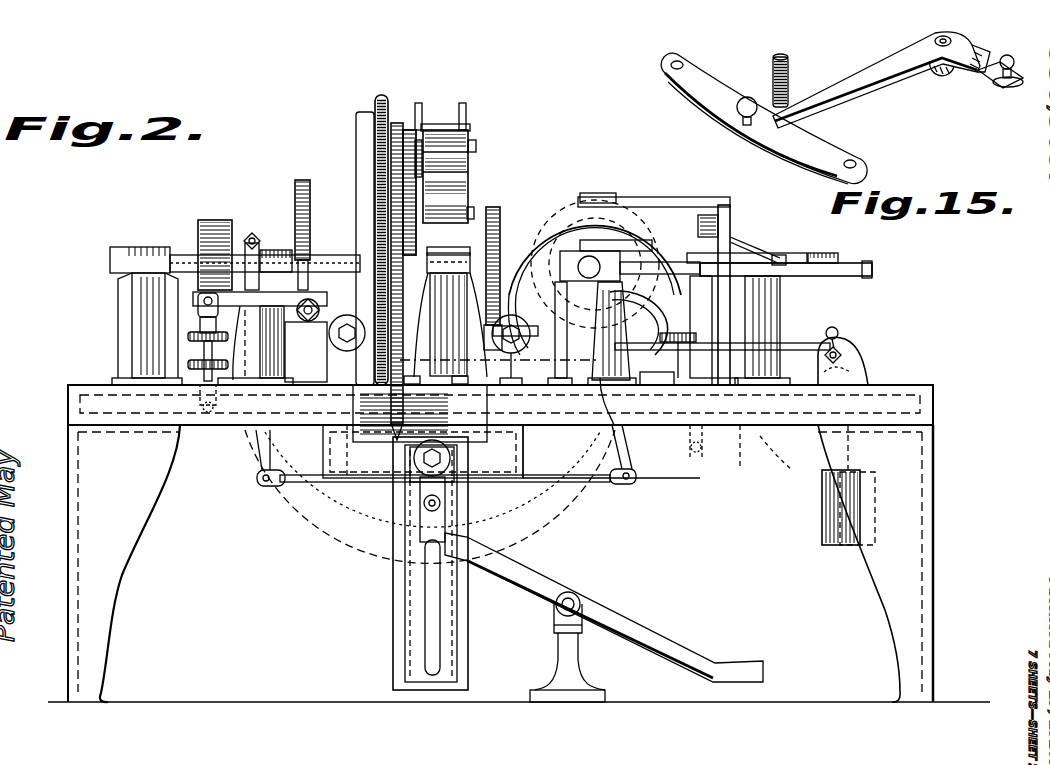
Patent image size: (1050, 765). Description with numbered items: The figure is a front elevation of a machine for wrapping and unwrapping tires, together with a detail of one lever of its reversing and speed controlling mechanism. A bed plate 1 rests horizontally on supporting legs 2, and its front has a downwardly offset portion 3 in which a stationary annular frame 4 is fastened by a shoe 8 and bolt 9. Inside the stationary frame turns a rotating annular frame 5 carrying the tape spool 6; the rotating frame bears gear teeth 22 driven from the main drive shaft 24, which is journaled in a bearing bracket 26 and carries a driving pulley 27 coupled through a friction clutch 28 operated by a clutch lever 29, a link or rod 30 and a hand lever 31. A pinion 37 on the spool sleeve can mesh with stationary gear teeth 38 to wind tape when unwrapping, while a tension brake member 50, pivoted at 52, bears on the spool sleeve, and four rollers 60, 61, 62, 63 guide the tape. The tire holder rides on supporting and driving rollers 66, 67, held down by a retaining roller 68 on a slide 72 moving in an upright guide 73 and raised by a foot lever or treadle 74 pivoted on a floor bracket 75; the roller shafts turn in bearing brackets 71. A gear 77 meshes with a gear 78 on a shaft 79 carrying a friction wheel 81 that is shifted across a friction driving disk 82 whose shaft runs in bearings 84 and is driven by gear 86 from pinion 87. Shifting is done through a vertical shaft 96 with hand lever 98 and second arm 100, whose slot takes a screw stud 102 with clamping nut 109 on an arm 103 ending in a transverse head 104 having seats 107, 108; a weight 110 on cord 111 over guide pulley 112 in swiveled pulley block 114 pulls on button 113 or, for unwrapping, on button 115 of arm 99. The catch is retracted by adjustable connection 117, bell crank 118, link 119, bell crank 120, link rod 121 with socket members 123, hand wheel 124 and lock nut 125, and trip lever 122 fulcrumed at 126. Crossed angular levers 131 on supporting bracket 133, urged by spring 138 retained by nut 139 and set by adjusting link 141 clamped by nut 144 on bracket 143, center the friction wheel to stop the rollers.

In FIG. 2, the bed plate 1 is at (900, 392).
In FIG. 2, the supporting legs 2 is at (148, 497).
In FIG. 2, the downwardly offset portion 3 is at (345, 463).
In FIG. 2, the stationary annular frame 4 is at (382, 96).
In FIG. 2, the rotating annular frame 5 is at (357, 120).
In FIG. 2, the tape spool 6 is at (462, 103).
In FIG. 2, the shoe 8 is at (420, 413).
In FIG. 2, the bolt 9 is at (499, 494).
In FIG. 2, the gear teeth 22 is at (397, 122).
In FIG. 2, the longitudinal shaft 24 is at (180, 255).
In FIG. 2, the bearing bracket 26 is at (133, 248).
In FIG. 2, the driving pulley 27 is at (214, 220).
In FIG. 2, the friction clutch 28 is at (245, 236).
In FIG. 2, the clutch lever 29 is at (275, 250).
In FIG. 2, the link or rod 30 is at (655, 368).
In FIG. 2, the hand lever 31 is at (641, 423).
In FIG. 2, the pinion 37 is at (423, 140).
In FIG. 2, the gear teeth 38 is at (476, 142).
In FIG. 2, the tension brake member 50 is at (418, 104).
In FIG. 2, the pivot 52 is at (430, 152).
In FIG. 2, the roller 60 is at (481, 212).
In FIG. 2, the roller 61 is at (450, 206).
In FIG. 2, the roller 62 is at (440, 172).
In FIG. 2, the roller 63 is at (474, 208).
In FIG. 2, the supporting and driving roller 66 is at (334, 350).
In FIG. 2, the supporting and driving roller 67 is at (528, 265).
In FIG. 2, the retaining roller 68 is at (446, 448).
In FIG. 2, the bearing bracket 71 is at (306, 352).
In FIG. 2, the slide 72 is at (445, 487).
In FIG. 2, the upright guide 73 is at (398, 540).
In FIG. 2, the foot lever or treadle 74 is at (548, 582).
In FIG. 2, the bracket 75 is at (556, 655).
In FIG. 2, the gear 77 is at (611, 451).
In FIG. 2, the gear 78 is at (682, 336).
In FIG. 2, the shaft 79 is at (625, 247).
In FIG. 2, the friction wheel 81 is at (598, 178).
In FIG. 2, the friction driving disk 82 is at (595, 264).
In FIG. 2, the bearings 84 is at (311, 212).
In FIG. 2, the gear 86 is at (300, 182).
In FIG. 2, the pinion 87 is at (311, 242).
In FIG. 2, the vertical pivot or shaft 96 is at (732, 216).
In FIG. 2, the hand lever 98 is at (645, 197).
In FIG. 2, the angularly projecting arm 99 is at (772, 434).
In FIG. 15, the angularly projecting arm 99 is at (991, 54).
In FIG. 2, the second arm 100 is at (608, 333).
In FIG. 15, the screw stud 102 is at (790, 77).
In FIG. 2, the arm 103 is at (585, 409).
In FIG. 15, the arm 103 is at (880, 88).
In FIG. 15, the transverse head 104 is at (823, 150).
In FIG. 15, the seat 107 is at (866, 160).
In FIG. 15, the seat 108 is at (664, 62).
In FIG. 2, the clamping nut 109 is at (722, 442).
In FIG. 2, the weight 110 is at (822, 503).
In FIG. 2, the cord 111 is at (722, 334).
In FIG. 2, the guide pulley 112 is at (848, 342).
In FIG. 15, the stud or button 113 is at (744, 125).
In FIG. 2, the pulley block 114 is at (862, 380).
In FIG. 2, the pin or button 115 is at (838, 333).
In FIG. 15, the pin or button 115 is at (1000, 84).
In FIG. 2, the adjustable connection 117 is at (788, 455).
In FIG. 2, the bell crank 118 is at (636, 476).
In FIG. 2, the link 119 is at (590, 481).
In FIG. 2, the bell crank 120 is at (255, 443).
In FIG. 2, the link rod 121 is at (204, 350).
In FIG. 2, the trip lever 122 is at (260, 337).
In FIG. 2, the threaded socket member 123 is at (198, 312).
In FIG. 2, the hand wheel 124 is at (190, 364).
In FIG. 2, the lock nut 125 is at (192, 335).
In FIG. 2, the fulcrum 126 is at (312, 268).
In FIG. 2, the angular levers 131 is at (808, 259).
In FIG. 2, the supporting bracket 133 is at (860, 282).
In FIG. 2, the spring 138 is at (780, 258).
In FIG. 2, the nut 139 is at (712, 252).
In FIG. 2, the adjusting link 141 is at (532, 339).
In FIG. 2, the bracket 143 is at (712, 252).
In FIG. 2, the clamping nut 144 is at (640, 255).